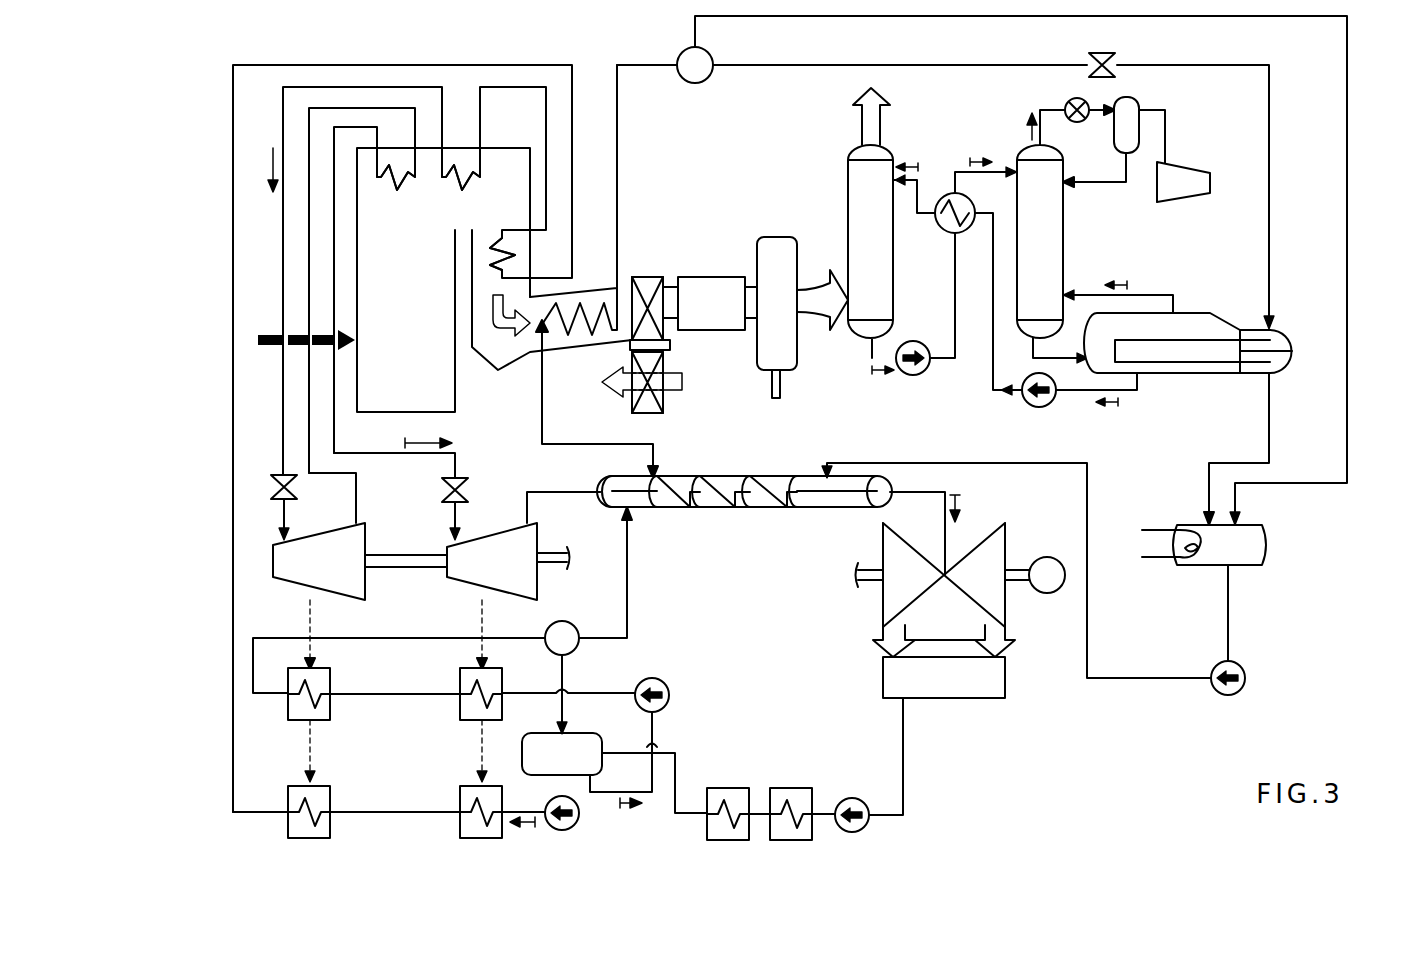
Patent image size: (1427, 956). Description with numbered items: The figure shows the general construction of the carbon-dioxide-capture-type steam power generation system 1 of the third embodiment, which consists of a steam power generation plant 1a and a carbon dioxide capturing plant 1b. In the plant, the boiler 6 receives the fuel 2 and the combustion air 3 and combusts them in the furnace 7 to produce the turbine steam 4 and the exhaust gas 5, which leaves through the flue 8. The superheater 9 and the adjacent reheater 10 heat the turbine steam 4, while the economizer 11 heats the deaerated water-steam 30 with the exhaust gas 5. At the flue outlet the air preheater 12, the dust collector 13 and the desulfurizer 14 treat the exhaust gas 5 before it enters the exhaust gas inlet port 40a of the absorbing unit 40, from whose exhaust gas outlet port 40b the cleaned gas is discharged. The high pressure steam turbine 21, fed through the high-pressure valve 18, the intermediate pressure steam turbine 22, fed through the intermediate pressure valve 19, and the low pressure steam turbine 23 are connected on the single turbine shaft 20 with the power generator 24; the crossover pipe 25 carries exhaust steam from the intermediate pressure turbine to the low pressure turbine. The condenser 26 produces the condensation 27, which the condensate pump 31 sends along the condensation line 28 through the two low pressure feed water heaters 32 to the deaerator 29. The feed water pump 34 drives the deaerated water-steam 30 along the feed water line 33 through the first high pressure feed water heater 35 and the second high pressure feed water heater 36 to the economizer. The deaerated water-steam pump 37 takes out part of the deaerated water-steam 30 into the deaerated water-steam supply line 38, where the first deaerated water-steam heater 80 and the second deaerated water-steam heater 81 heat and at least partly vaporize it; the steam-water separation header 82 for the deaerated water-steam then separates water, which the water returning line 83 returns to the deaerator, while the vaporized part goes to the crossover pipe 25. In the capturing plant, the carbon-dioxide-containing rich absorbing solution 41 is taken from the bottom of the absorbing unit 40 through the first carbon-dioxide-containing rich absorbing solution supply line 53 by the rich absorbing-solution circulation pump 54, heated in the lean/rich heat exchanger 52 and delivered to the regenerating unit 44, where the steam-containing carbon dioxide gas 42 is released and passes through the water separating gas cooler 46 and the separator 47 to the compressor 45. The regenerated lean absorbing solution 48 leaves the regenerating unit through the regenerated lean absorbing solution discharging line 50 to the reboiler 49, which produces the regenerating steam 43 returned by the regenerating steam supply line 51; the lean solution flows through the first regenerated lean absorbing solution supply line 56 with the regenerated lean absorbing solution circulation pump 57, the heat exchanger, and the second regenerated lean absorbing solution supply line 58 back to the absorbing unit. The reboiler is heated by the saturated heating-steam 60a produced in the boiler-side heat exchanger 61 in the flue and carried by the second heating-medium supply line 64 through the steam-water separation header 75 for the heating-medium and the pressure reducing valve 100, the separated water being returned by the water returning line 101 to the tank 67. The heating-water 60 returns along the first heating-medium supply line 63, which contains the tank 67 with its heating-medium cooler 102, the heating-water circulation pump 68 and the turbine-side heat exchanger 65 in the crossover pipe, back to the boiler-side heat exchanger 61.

The carbon-dioxide-capture-type steam power generation system 1 is at (205, 76).
The steam power generation plant 1a is at (228, 113).
The carbon dioxide capturing plant 1b is at (1352, 118).
The fuel 2 is at (262, 332).
The combustion air 3 is at (684, 383).
The turbine steam 4 is at (270, 160).
The exhaust gas 5 is at (525, 340).
The boiler 6 is at (393, 245).
The furnace 7 is at (396, 377).
The flue 8 is at (482, 345).
The superheater 9 is at (456, 188).
The reheater 10 is at (392, 190).
The economizer 11 is at (492, 255).
The air preheater 12 is at (648, 285).
The dust collector 13 is at (712, 282).
The desulfurizer 14 is at (758, 342).
The high-pressure valve 18 is at (272, 482).
The intermediate pressure valve 19 is at (445, 490).
The turbine shaft 20 is at (403, 556).
The high pressure steam turbine 21 is at (322, 542).
The intermediate pressure steam turbine 22 is at (495, 542).
The low pressure steam turbine 23 is at (885, 600).
The power generator 24 is at (1047, 595).
The crossover pipe 25 is at (722, 508).
The condenser 26 is at (975, 698).
The condensation 27 is at (880, 828).
The condensation line 28 is at (690, 805).
The deaerator 29 is at (575, 740).
The deaerated water-steam 30 is at (525, 828).
The condensate pump 31 is at (855, 798).
The low pressure feed water heaters 32 is at (795, 783).
The feed water line 33 is at (233, 705).
The feed water pump 34 is at (578, 825).
The first high pressure feed water heater 35 is at (460, 805).
The second high pressure feed water heater 36 is at (330, 805).
The deaerated water-steam pump 37 is at (660, 678).
The deaerated water-steam supply line 38 is at (372, 637).
The absorbing unit 40 is at (848, 197).
The exhaust gas inlet port 40a is at (852, 335).
The exhaust gas outlet port 40b is at (855, 147).
The carbon-dioxide-containing rich absorbing solution 41 is at (978, 158).
The steam-containing carbon dioxide gas 42 is at (1030, 130).
The regenerating steam 43 is at (1125, 285).
The regenerating unit 44 is at (1066, 218).
The compressor 45 is at (1200, 170).
The water separating gas cooler 46 is at (1088, 124).
The separator 47 is at (1137, 98).
The regenerated lean absorbing solution 48 is at (918, 160).
The reboiler 49 is at (1190, 372).
The regenerated lean absorbing solution discharging line 50 is at (1062, 365).
The regenerating steam supply line 51 is at (1165, 310).
The lean/rich heat exchanger 52 is at (950, 195).
The first carbon-dioxide-containing rich absorbing solution supply line 53 is at (950, 268).
The rich absorbing-solution circulation pump 54 is at (918, 378).
The first regenerated lean absorbing solution supply line 56 is at (990, 268).
The regenerated lean absorbing solution circulation pump 57 is at (1025, 405).
The second regenerated lean absorbing solution supply line 58 is at (912, 205).
The heating-water 60 is at (1240, 588).
The saturated heating-steam 60a is at (795, 58).
The boiler-side heat exchanger 61 is at (592, 300).
The first heating-medium supply line 63 is at (1115, 690).
The second heating-medium supply line 64 is at (985, 65).
The turbine-side heat exchanger 65 is at (735, 475).
The tank 67 is at (1262, 545).
The heating-water circulation pump 68 is at (1220, 698).
The steam-water separation header for the heating-medium 75 is at (680, 50).
The first deaerated water-steam heater 80 is at (460, 712).
The second deaerated water-steam heater 81 is at (330, 712).
The steam-water separation header for the deaerated water-steam 82 is at (565, 622).
The water returning line for the deaerated water-steam 83 is at (565, 685).
The pressure reducing valve 100 is at (1110, 55).
The water returning line for the heating-medium 101 is at (1345, 50).
The heating-medium cooler 102 is at (1160, 565).